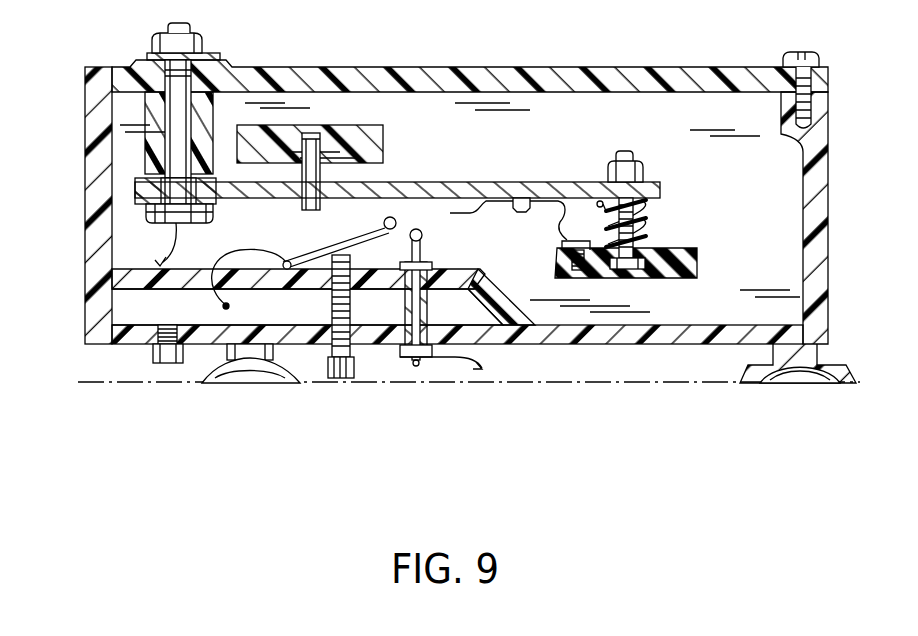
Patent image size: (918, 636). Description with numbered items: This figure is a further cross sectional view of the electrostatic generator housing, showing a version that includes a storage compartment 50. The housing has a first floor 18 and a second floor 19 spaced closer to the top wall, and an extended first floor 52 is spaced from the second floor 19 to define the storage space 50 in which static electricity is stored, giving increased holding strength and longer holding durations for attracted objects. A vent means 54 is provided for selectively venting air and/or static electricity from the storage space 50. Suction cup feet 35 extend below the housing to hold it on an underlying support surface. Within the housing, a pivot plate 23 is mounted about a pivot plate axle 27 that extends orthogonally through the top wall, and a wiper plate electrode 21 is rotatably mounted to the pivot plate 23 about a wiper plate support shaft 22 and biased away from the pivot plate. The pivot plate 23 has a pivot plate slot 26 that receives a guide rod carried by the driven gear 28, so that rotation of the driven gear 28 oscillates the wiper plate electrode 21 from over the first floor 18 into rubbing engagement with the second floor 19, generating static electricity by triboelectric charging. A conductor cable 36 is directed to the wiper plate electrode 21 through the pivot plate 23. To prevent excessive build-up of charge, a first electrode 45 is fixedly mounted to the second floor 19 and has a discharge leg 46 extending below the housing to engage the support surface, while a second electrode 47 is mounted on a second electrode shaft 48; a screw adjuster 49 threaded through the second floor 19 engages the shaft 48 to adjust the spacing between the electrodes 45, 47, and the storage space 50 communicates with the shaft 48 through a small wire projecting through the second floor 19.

The housing first floor 18 is at (683, 325).
The housing second floor 19 is at (128, 268).
The wiper plate electrode 21 is at (683, 262).
The wiper plate support shaft 22 is at (648, 226).
The pivot plate 23 is at (507, 197).
The pivot plate slot 26 is at (345, 182).
The pivot plate axle 27 is at (180, 150).
The driven gear 28 is at (350, 125).
The suction cup feet 35 is at (790, 378).
The conductor cable 36 is at (162, 246).
The first electrode 45 is at (425, 233).
The first electrode discharge leg 46 is at (480, 364).
The second electrode 47 is at (383, 221).
The second electrode shaft 48 is at (332, 250).
The screw adjuster 49 is at (350, 352).
The storage compartment 50 is at (147, 307).
The extended first floor 52 is at (295, 342).
The vent means 54 is at (165, 360).